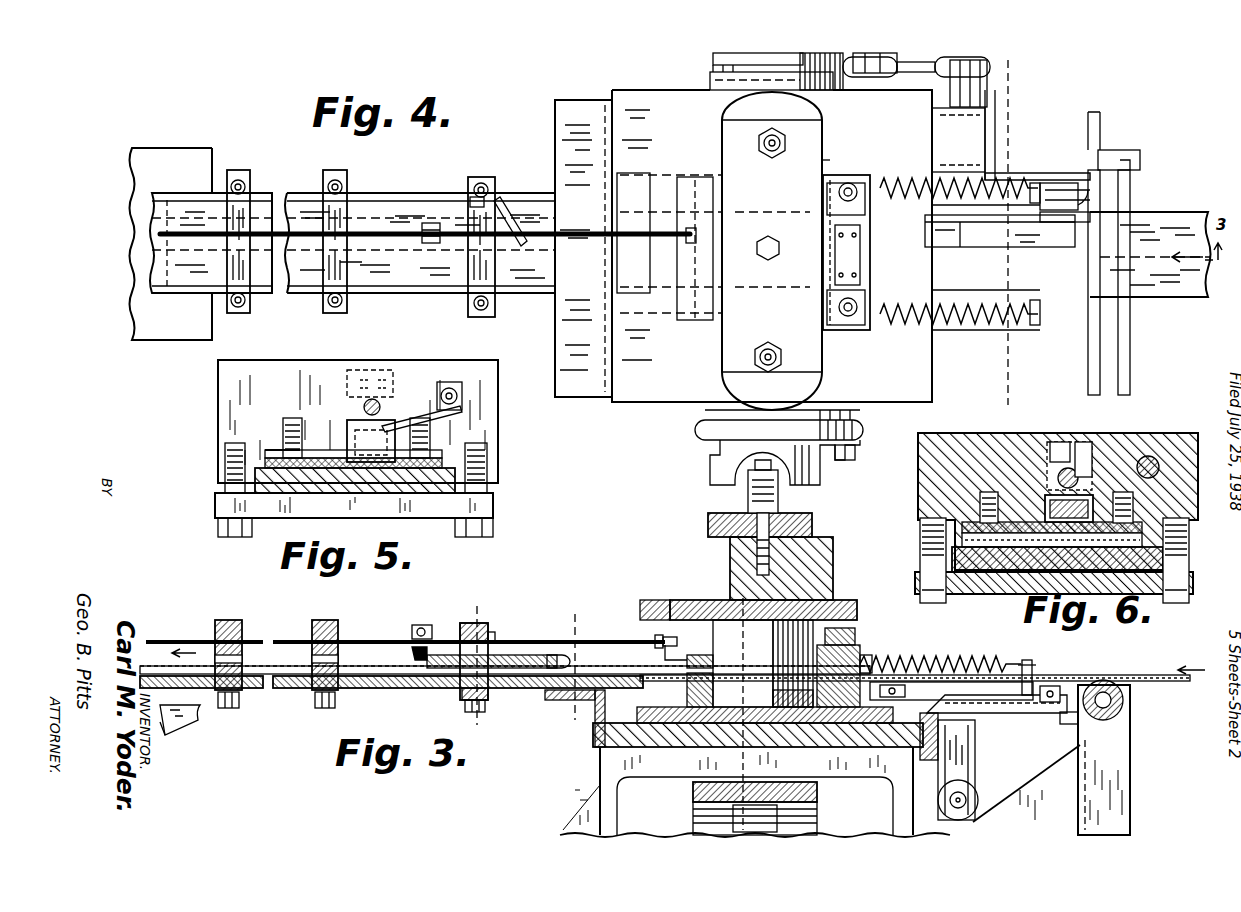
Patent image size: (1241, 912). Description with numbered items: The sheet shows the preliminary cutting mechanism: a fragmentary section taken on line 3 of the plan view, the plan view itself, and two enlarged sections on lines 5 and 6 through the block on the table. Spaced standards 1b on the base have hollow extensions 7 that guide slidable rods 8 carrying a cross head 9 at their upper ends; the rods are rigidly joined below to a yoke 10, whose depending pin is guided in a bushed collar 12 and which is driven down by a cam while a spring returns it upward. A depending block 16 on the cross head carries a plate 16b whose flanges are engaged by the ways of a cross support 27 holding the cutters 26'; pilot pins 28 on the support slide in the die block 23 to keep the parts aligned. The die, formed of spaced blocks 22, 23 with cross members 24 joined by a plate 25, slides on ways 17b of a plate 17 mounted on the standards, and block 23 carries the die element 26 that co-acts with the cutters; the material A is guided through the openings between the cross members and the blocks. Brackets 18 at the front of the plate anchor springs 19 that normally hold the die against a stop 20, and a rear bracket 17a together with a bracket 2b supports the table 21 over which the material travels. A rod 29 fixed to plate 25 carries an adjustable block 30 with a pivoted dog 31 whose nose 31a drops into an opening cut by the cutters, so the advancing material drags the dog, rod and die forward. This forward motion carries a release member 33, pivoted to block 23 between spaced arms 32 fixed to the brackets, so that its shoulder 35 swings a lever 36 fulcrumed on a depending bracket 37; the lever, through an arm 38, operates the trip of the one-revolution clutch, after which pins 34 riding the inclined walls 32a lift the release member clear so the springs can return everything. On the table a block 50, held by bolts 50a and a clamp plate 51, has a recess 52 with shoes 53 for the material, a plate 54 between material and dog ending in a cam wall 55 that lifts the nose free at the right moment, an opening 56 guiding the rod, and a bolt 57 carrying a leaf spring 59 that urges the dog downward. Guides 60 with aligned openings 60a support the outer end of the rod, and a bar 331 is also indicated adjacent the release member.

In FIG. 3, the standards 1b is at (605, 775).
In FIG. 4, the bracket 2b is at (163, 334).
In FIG. 3, the bracket 2b is at (185, 720).
In FIG. 4, the section line 3- 3 is at (112, 234).
In FIG. 3, the section line 5- 5 is at (575, 614).
In FIG. 3, the section line 6- 6 is at (477, 606).
In FIG. 4, the hollow extensions 7 is at (805, 118).
In FIG. 3, the hollow extensions 7 is at (716, 598).
In FIG. 4, the slidable rods 8 is at (788, 140).
In FIG. 4, the cross head 9 is at (820, 162).
In FIG. 6, the cross head 9 is at (1063, 442).
In FIG. 3, the cross head 9 is at (718, 513).
In FIG. 3, the yoke 10 is at (817, 792).
In FIG. 4, the bushed collar 12 is at (1018, 66).
In FIG. 6, the bushed collar 12 is at (1012, 409).
In FIG. 4, the depending block 16 is at (840, 268).
In FIG. 3, the depending block 16 is at (833, 556).
In FIG. 4, the plate 16b is at (690, 282).
In FIG. 3, the plate 16b is at (692, 598).
In FIG. 3, the plate 17 is at (720, 748).
In FIG. 4, the bracket 17a is at (570, 397).
In FIG. 3, the bracket 17a is at (566, 700).
In FIG. 4, the ways 17b is at (660, 322).
In FIG. 3, the ways 17b is at (650, 707).
In FIG. 4, the brackets 18 is at (1012, 178).
In FIG. 4, the springs 19 is at (913, 180).
In FIG. 3, the springs 19 is at (915, 658).
In FIG. 3, the stop 20 is at (940, 735).
In FIG. 4, the table 21 is at (414, 293).
In FIG. 5, the table 21 is at (315, 495).
In FIG. 6, the table 21 is at (978, 575).
In FIG. 3, the table 21 is at (372, 690).
In FIG. 3, the die block 22 is at (687, 690).
In FIG. 3, the die block 23 is at (782, 699).
In FIG. 3, the cross members 24 is at (698, 654).
In FIG. 3, the plate 25 is at (733, 652).
In FIG. 3, the die element 26 is at (780, 663).
In FIG. 3, the cutter 26' is at (878, 655).
In FIG. 4, the cross support 27 is at (832, 262).
In FIG. 3, the cross support 27 is at (860, 628).
In FIG. 4, the pilot pins 28 is at (855, 185).
In FIG. 3, the pilot pins 28 is at (860, 650).
In FIG. 4, the rod 29 is at (657, 233).
In FIG. 5, the rod 29 is at (380, 408).
In FIG. 3, the rod 29 is at (640, 640).
In FIG. 4, the block 30 is at (430, 247).
In FIG. 5, the block 30 is at (392, 370).
In FIG. 6, the block 30 is at (1095, 445).
In FIG. 3, the block 30 is at (416, 625).
In FIG. 4, the dog 31 is at (452, 243).
In FIG. 5, the dog 31 is at (347, 437).
In FIG. 6, the dog 31 is at (1048, 495).
In FIG. 3, the dog 31 is at (447, 668).
In FIG. 3, the nose 31a is at (575, 667).
In FIG. 4, the spaced arms 32 is at (1052, 183).
In FIG. 3, the spaced arms 32 is at (1062, 722).
In FIG. 4, the inclined walls 32a is at (1088, 182).
In FIG. 3, the inclined walls 32a is at (1060, 718).
In FIG. 4, the release member 33 is at (1000, 231).
In FIG. 4, the pins 34 is at (1110, 192).
In FIG. 3, the pins 34 is at (1052, 685).
In FIG. 3, the shoulder 35 is at (1000, 695).
In FIG. 3, the lever 36 is at (975, 752).
In FIG. 3, the depending bracket 37 is at (940, 805).
In FIG. 4, the arm 38 is at (852, 116).
In FIG. 4, the block 50 is at (495, 300).
In FIG. 5, the block 50 is at (490, 400).
In FIG. 3, the block 50 is at (480, 622).
In FIG. 5, the bolts 50a is at (493, 530).
In FIG. 6, the bolts 50a is at (1178, 603).
In FIG. 5, the clamp plate 51 is at (493, 502).
In FIG. 6, the clamp plate 51 is at (1010, 575).
In FIG. 5, the recess 52 is at (440, 453).
In FIG. 6, the recess 52 is at (950, 518).
In FIG. 5, the shoes 53 is at (445, 462).
In FIG. 6, the plate 54 is at (962, 538).
In FIG. 3, the plate 54 is at (488, 696).
In FIG. 3, the cam wall 55 is at (557, 653).
In FIG. 5, the opening 56 is at (365, 410).
In FIG. 4, the bolt 57 is at (463, 200).
In FIG. 5, the bolt 57 is at (455, 382).
In FIG. 6, the bolt 57 is at (1152, 458).
In FIG. 4, the leaf spring 59 is at (513, 217).
In FIG. 5, the leaf spring 59 is at (445, 382).
In FIG. 4, the guides 60 is at (317, 183).
In FIG. 3, the guides 60 is at (232, 620).
In FIG. 3, the opening 60a is at (215, 638).
In FIG. 3, the bar 331 is at (940, 682).
In FIG. 4, the material A is at (1178, 214).
In FIG. 5, the material A is at (270, 450).
In FIG. 3, the material A is at (1160, 676).